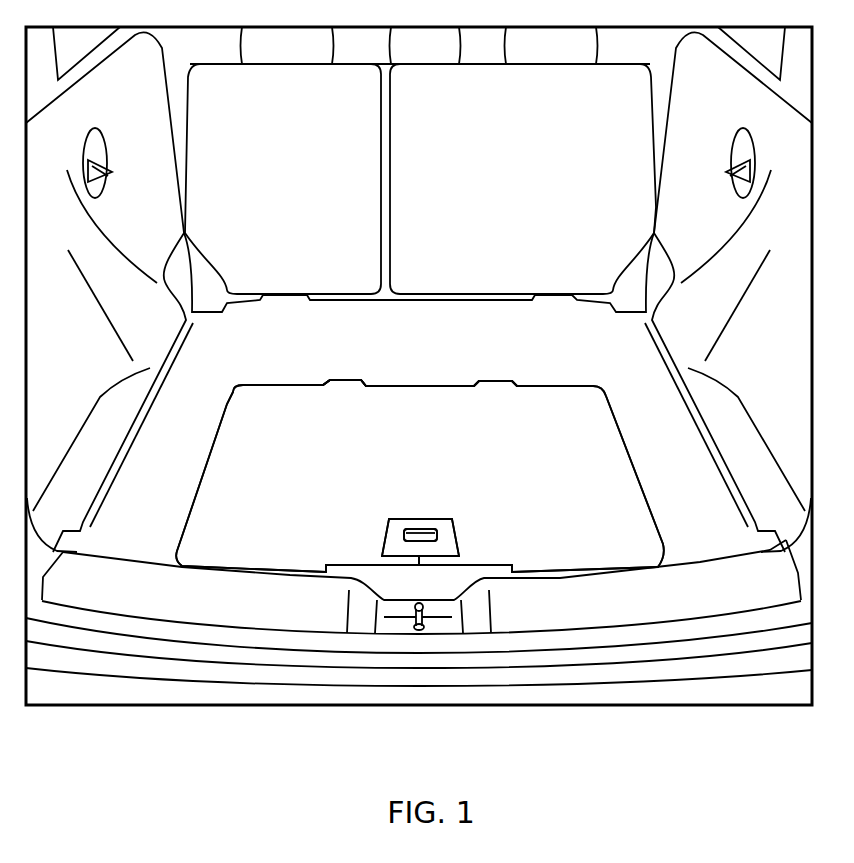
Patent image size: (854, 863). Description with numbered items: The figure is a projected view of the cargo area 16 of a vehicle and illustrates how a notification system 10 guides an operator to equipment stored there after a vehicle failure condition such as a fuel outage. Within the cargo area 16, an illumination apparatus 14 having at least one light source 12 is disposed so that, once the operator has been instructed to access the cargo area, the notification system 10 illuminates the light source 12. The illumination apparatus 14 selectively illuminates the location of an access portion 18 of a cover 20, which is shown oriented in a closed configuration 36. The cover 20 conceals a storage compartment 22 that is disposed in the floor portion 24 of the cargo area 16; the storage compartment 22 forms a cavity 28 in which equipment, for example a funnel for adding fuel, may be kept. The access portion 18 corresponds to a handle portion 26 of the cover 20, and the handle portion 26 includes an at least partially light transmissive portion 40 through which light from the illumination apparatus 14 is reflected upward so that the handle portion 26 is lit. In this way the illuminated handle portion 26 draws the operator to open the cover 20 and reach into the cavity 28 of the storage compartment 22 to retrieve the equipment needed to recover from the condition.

The notification system 10 is at (590, 469).
The light source 12 is at (417, 568).
The illumination apparatus 14 is at (407, 507).
The cargo area 16 is at (410, 357).
The access portion 18 is at (444, 536).
The cover 20 is at (547, 400).
The storage compartment 22 is at (282, 426).
The floor portion 24 is at (150, 482).
The handle portion 26 is at (409, 532).
The cavity 28 is at (282, 426).
The closed configuration 36 is at (481, 331).
The light transmissive portion 40 is at (441, 526).